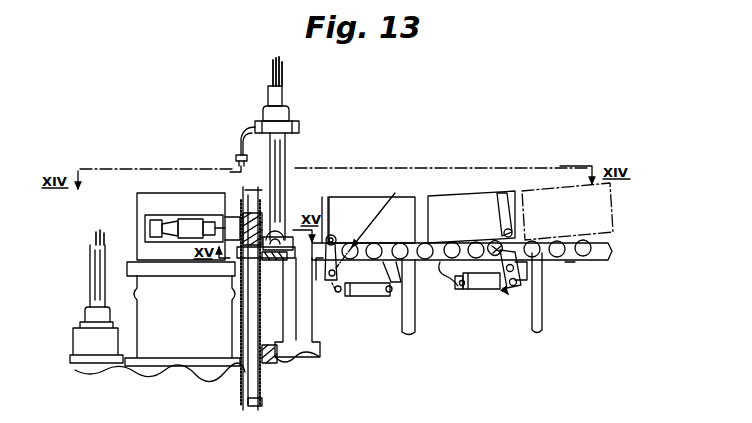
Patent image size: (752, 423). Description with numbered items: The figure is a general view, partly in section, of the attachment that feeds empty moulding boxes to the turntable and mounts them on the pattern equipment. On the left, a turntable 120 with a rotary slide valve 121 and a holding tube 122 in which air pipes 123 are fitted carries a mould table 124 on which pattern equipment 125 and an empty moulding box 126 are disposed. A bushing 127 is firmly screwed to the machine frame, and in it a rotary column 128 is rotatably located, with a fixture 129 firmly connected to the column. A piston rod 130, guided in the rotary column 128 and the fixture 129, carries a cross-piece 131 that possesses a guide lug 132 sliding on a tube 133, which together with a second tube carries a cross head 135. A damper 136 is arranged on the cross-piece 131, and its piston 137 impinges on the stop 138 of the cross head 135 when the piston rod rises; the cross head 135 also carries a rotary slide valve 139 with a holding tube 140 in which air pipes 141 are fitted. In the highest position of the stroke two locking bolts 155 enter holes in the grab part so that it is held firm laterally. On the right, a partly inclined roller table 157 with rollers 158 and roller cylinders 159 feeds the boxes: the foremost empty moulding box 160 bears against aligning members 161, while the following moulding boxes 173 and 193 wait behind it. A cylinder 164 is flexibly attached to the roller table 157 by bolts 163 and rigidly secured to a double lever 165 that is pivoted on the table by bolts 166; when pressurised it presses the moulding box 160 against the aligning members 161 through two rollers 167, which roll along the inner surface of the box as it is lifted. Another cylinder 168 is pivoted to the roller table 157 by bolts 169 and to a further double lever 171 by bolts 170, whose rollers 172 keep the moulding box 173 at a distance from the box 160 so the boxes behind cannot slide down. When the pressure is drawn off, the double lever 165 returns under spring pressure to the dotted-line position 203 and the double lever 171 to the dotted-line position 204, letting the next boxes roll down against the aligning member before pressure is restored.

The turntable 120 is at (134, 368).
The rotary slide valve 121 is at (82, 318).
The holding tube 122 is at (89, 282).
The air pipes 123 is at (98, 247).
The mould table 124 is at (128, 262).
The pattern equipment 125 is at (146, 228).
The empty moulding box 126 is at (136, 200).
The bushing 127 is at (242, 370).
The rotary column 128 is at (270, 366).
The fixture 129 is at (290, 310).
The piston rod 130 is at (262, 403).
The cross-piece 131 is at (256, 213).
The guide lug 132 is at (290, 256).
The tube 133 is at (287, 152).
The cross head 135 is at (300, 129).
The damper 136 is at (260, 195).
The piston 137 is at (246, 172).
The stop 138 is at (241, 150).
The rotary slide valve 139 is at (292, 111).
The holding tube 140 is at (284, 95).
The air pipes 141 is at (272, 60).
The locking bolts 155 is at (248, 158).
The roller table 157 is at (440, 266).
The rollers 158 is at (492, 244).
The roller cylinders 159 is at (565, 261).
The moulding box 160 is at (382, 196).
The aligning members 161 is at (324, 196).
The bolts 163 is at (389, 293).
The cylinder 164 is at (366, 298).
The double lever 165 is at (338, 293).
The bolts 166 is at (329, 276).
The rollers 167 is at (333, 236).
The cylinder 168 is at (482, 292).
The bolts 169 is at (460, 290).
The bolts 170 is at (503, 270).
The double lever 171 is at (520, 281).
The rollers 172 is at (506, 228).
The moulding box 173 is at (476, 195).
The moulding box 193 is at (614, 214).
The position 203 is at (382, 220).
The position 204 is at (505, 293).